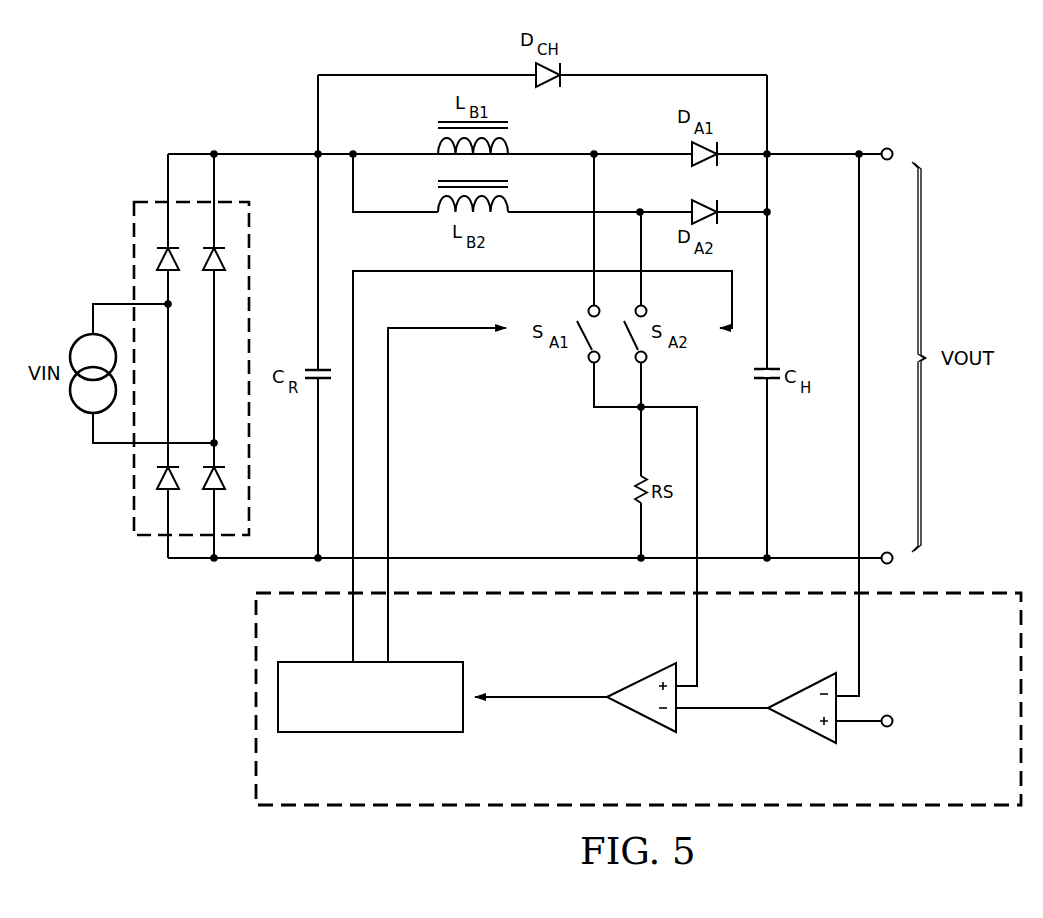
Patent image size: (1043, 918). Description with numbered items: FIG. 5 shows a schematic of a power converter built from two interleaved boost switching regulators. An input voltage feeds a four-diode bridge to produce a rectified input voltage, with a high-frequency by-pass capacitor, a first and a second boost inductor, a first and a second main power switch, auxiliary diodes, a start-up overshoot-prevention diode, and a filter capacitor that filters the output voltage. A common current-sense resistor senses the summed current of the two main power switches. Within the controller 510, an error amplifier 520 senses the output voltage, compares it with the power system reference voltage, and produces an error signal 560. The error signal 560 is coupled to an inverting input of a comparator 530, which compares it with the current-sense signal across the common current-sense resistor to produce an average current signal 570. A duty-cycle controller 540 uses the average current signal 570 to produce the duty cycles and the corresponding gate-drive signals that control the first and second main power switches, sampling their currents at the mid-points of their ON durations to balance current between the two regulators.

The controller 510 is at (248, 741).
The error amplifier 520 is at (803, 728).
The comparator 530 is at (643, 717).
The duty-cycle controller 540 is at (372, 733).
The error signal 560 is at (727, 707).
The average current signal 570 is at (535, 695).